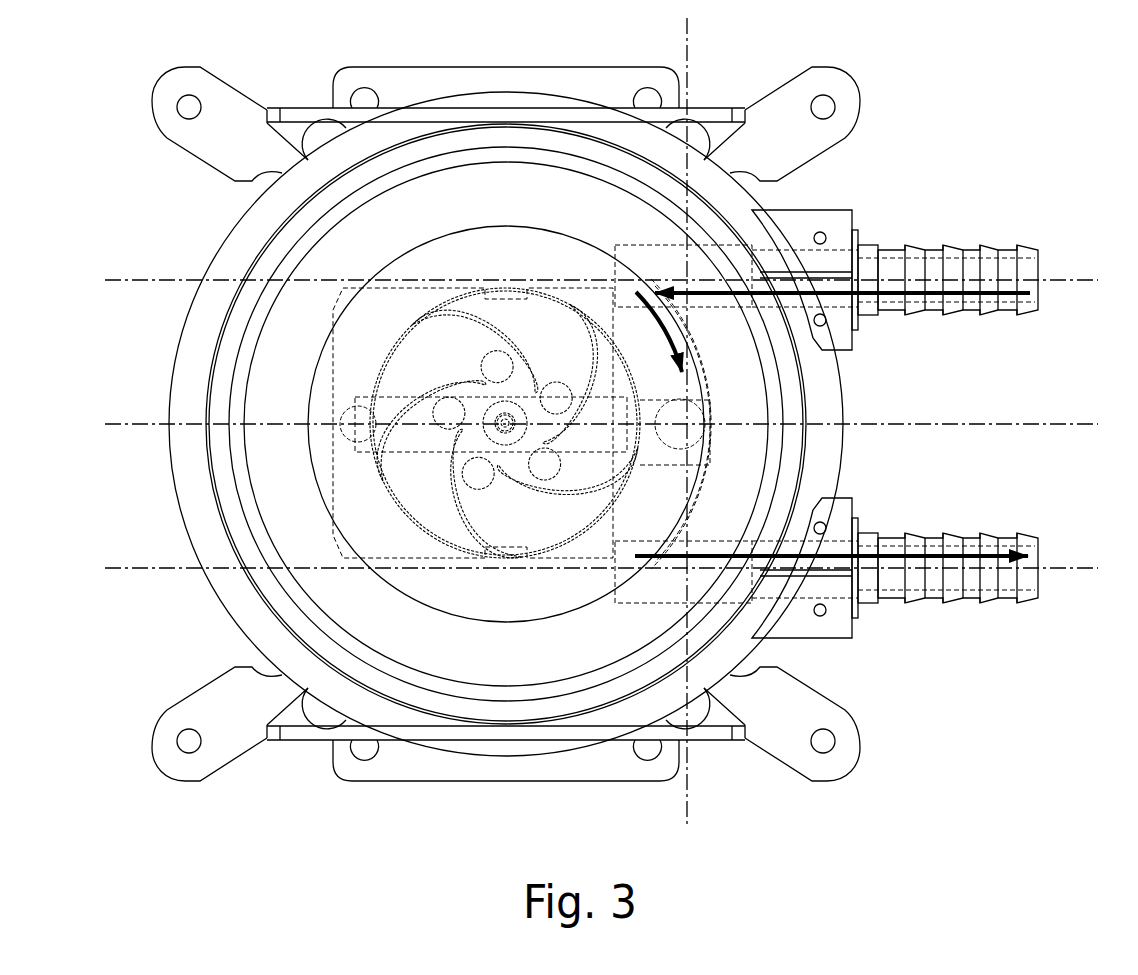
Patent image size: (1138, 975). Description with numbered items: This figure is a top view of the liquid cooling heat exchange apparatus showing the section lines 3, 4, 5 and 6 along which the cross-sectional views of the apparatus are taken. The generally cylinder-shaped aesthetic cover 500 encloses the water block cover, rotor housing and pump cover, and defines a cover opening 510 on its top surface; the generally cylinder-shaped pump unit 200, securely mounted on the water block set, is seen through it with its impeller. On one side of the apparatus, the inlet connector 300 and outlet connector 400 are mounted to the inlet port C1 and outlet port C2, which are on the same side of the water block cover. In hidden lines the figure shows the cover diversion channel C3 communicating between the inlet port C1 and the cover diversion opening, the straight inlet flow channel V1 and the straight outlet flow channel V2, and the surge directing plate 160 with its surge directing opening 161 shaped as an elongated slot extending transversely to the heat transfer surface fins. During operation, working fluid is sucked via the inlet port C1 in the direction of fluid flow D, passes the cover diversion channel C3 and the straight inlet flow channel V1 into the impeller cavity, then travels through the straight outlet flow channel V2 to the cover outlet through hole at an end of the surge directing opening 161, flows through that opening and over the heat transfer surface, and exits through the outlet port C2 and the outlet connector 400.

The pump unit 200 is at (418, 305).
The aesthetic cover 500 is at (553, 195).
The cover opening 510 is at (495, 245).
The inlet connector 300 is at (952, 255).
The outlet connector 400 is at (952, 600).
The surge directing plate 160 is at (345, 360).
The surge directing opening 161 is at (410, 399).
The straight inlet flow channel V1 is at (712, 437).
The straight outlet flow channel V2 is at (352, 410).
The inlet port C1 is at (692, 247).
The outlet port C2 is at (695, 597).
The cover diversion channel C3 is at (702, 378).
The direction of fluid flow D is at (672, 345).
The section 3- 3 is at (105, 424).
The section 4- 4 is at (105, 280).
The section 5- 5 is at (689, 35).
The section 6- 6 is at (105, 568).